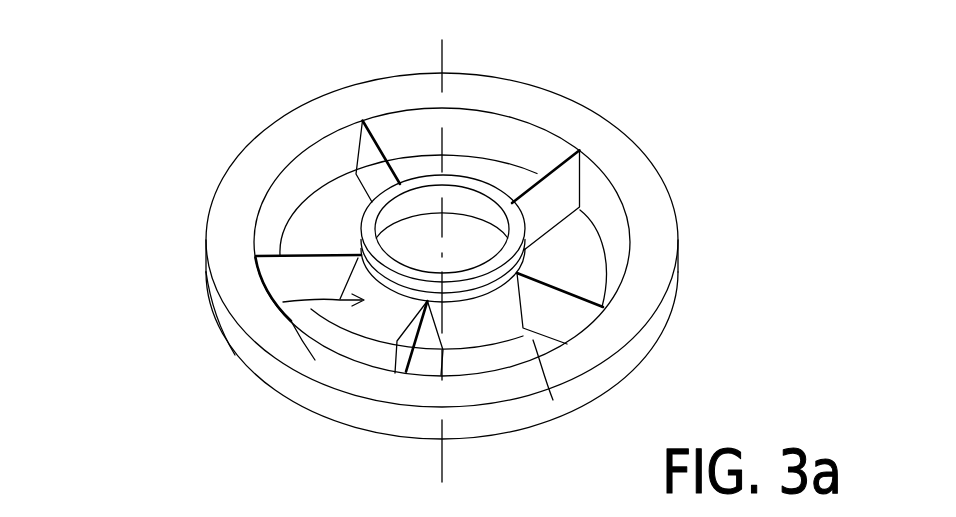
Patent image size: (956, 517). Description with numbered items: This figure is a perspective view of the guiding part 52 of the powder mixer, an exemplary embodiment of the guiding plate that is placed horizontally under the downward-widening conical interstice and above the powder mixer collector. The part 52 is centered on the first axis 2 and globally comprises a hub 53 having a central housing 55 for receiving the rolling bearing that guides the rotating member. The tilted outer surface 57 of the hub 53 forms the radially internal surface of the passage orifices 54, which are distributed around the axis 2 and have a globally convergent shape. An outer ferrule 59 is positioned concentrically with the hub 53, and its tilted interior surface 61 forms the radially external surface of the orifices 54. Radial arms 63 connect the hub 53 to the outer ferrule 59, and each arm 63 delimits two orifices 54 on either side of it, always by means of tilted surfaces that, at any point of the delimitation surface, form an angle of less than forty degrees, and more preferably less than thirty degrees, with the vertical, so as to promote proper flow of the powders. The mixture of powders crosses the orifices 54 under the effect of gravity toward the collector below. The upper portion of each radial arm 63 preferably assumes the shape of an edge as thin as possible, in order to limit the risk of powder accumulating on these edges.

The guiding part 52 is at (232, 56).
The tilted interior surface 61 is at (295, 187).
The passage orifices 54 is at (308, 228).
The central housing 55 is at (460, 232).
The radial arms 63 is at (372, 155).
The hub 53 is at (283, 302).
The outer ferrule 59 is at (255, 322).
The tilted outer surface 57 is at (533, 340).
The first axis 2 is at (440, 468).